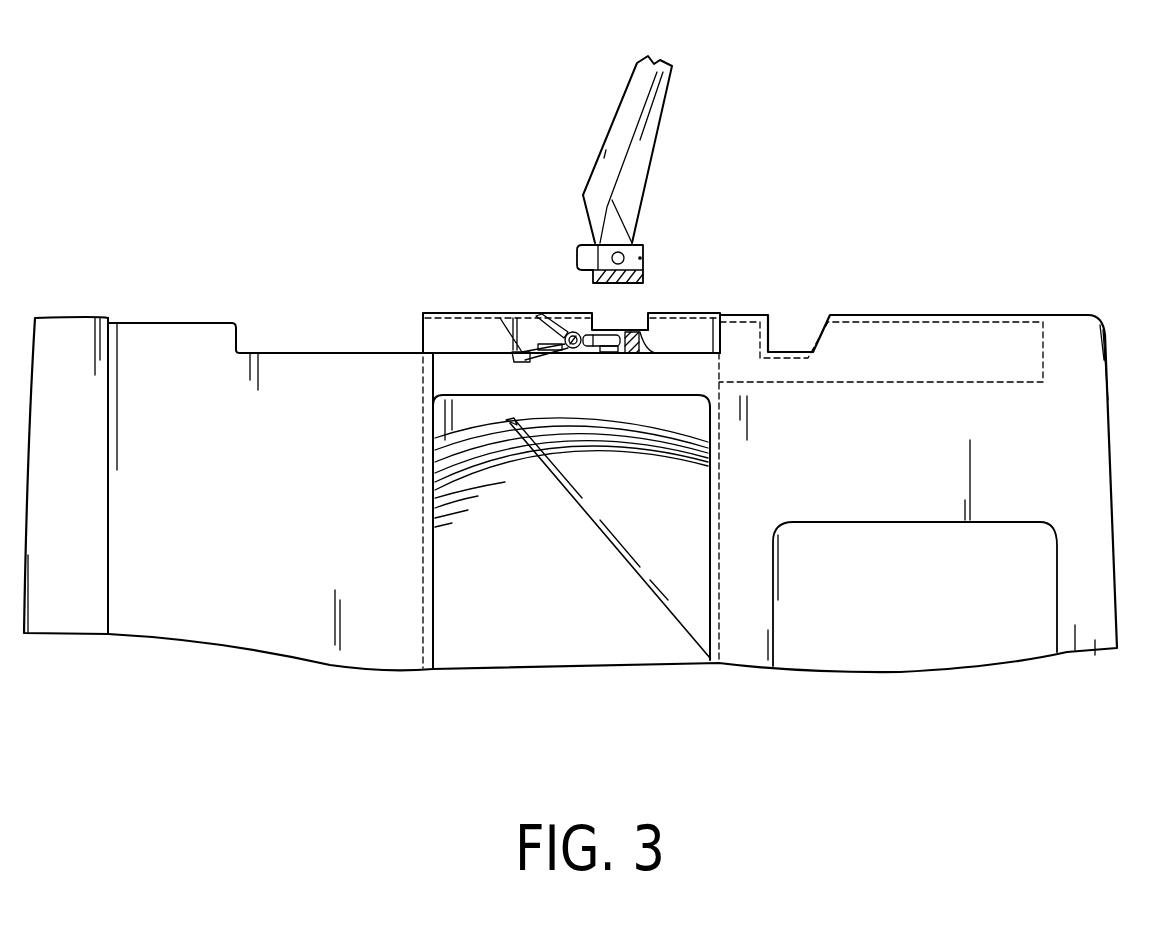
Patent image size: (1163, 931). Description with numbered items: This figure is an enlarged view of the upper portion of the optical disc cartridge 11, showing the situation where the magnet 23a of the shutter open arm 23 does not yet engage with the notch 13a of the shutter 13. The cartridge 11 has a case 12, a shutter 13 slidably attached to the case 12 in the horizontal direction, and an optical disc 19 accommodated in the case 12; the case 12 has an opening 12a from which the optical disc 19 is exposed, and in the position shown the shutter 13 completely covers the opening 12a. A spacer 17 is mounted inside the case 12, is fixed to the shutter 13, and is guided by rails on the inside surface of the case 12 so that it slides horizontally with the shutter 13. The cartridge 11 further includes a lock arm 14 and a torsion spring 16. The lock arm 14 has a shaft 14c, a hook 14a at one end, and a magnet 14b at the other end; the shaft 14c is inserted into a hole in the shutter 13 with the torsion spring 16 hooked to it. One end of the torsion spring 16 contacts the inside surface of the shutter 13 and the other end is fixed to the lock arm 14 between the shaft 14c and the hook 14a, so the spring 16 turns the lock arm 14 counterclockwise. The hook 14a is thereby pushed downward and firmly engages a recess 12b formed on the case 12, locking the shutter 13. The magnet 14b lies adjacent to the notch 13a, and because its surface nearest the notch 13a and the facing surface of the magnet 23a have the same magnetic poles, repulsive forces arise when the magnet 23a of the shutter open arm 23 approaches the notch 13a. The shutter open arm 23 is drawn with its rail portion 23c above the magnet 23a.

The optical disc cartridge 11 is at (1006, 296).
The case 12 is at (1088, 510).
The opening 12a is at (440, 563).
The recess 12b is at (527, 357).
The shutter 13 is at (697, 311).
The notch 13a is at (647, 335).
The lock arm 14 is at (530, 340).
The hook 14a is at (518, 350).
The magnet 14b is at (610, 352).
The shaft 14c is at (568, 332).
The torsion spring 16 is at (592, 350).
The spacer 17 is at (922, 332).
The optical disc 19 is at (567, 615).
The shutter open arm 23 is at (586, 171).
The magnet 23a is at (643, 260).
The arm rail 23c is at (630, 145).